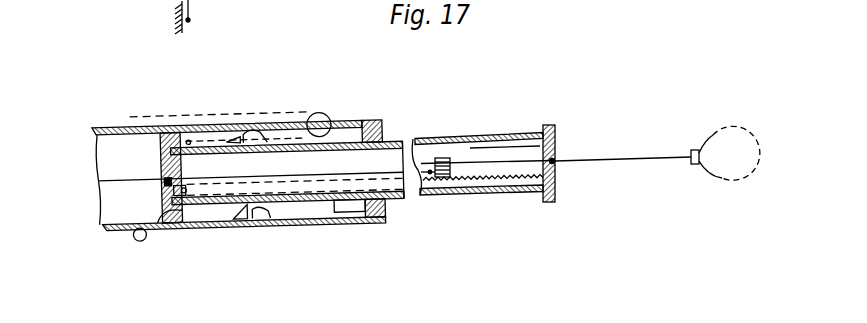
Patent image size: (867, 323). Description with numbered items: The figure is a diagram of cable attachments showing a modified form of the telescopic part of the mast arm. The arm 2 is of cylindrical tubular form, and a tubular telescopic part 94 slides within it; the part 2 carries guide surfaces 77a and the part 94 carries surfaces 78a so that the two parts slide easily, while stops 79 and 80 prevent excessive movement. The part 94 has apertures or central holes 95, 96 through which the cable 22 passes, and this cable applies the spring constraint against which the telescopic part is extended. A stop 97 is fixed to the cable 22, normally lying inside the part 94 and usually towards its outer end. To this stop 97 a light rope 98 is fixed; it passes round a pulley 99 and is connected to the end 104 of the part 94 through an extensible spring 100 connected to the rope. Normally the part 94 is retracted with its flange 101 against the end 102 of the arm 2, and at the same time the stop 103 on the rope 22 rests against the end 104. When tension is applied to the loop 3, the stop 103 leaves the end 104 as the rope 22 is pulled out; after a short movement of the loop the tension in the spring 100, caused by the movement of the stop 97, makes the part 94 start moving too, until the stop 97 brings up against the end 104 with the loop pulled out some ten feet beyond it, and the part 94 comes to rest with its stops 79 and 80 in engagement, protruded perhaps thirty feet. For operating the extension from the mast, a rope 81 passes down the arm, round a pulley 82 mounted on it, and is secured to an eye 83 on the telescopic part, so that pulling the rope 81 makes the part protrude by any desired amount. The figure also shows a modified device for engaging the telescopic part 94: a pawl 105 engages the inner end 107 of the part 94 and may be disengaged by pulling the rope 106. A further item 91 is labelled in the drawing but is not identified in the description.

The arm 2 is at (153, 131).
The loop 3 is at (749, 143).
The cable 22 is at (123, 178).
The guide surfaces 77a is at (383, 120).
The surfaces 78a is at (169, 135).
The stop 79 is at (238, 216).
The stop 80 is at (253, 132).
The rope 81 is at (137, 126).
The pulley 82 is at (315, 113).
The eye 83 is at (190, 140).
The pivot support 91 is at (188, 20).
The tubular telescopic part 94 is at (472, 138).
The aperture 95 is at (556, 161).
The aperture 96 is at (160, 180).
The stop 97 is at (442, 158).
The light rope 98 is at (318, 177).
The pulley 99 is at (183, 190).
The extensible spring 100 is at (504, 188).
The flange 101 is at (544, 200).
The end 102 is at (388, 198).
The stop 103 is at (693, 165).
The end 104 is at (557, 164).
The pawl 105 is at (148, 212).
The rope 106 is at (116, 231).
The inner end 107 is at (172, 228).